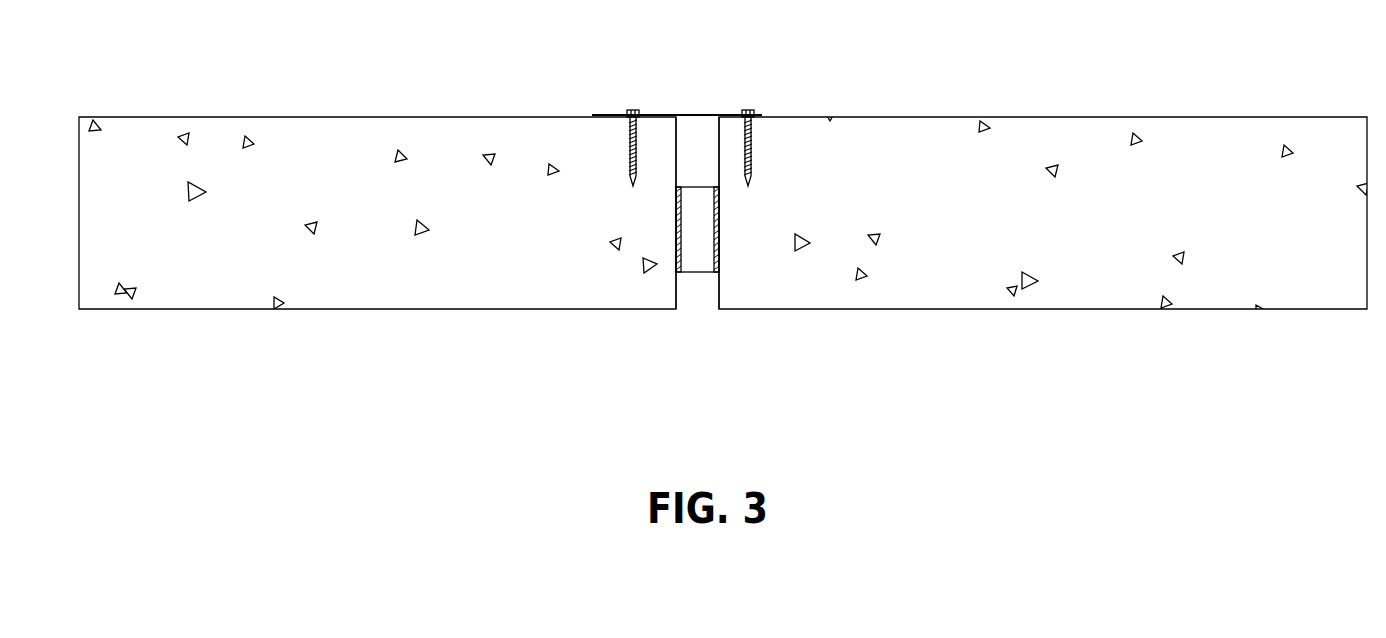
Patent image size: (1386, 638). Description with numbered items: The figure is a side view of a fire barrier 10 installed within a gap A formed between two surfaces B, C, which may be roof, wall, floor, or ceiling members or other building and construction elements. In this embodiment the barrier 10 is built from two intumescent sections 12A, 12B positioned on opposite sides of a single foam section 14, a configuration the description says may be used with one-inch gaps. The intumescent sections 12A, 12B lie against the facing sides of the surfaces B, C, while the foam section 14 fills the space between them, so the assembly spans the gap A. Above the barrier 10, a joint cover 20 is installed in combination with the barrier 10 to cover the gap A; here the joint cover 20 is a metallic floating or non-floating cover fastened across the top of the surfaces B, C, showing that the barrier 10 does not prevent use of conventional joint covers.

The fire barrier 10 is at (758, 341).
The intumescent section 12A is at (676, 218).
The intumescent section 12B is at (719, 232).
The foam section 14 is at (697, 273).
The joint cover 20 is at (696, 115).
The gap A is at (692, 366).
The surface B is at (463, 136).
The surface C is at (1033, 136).